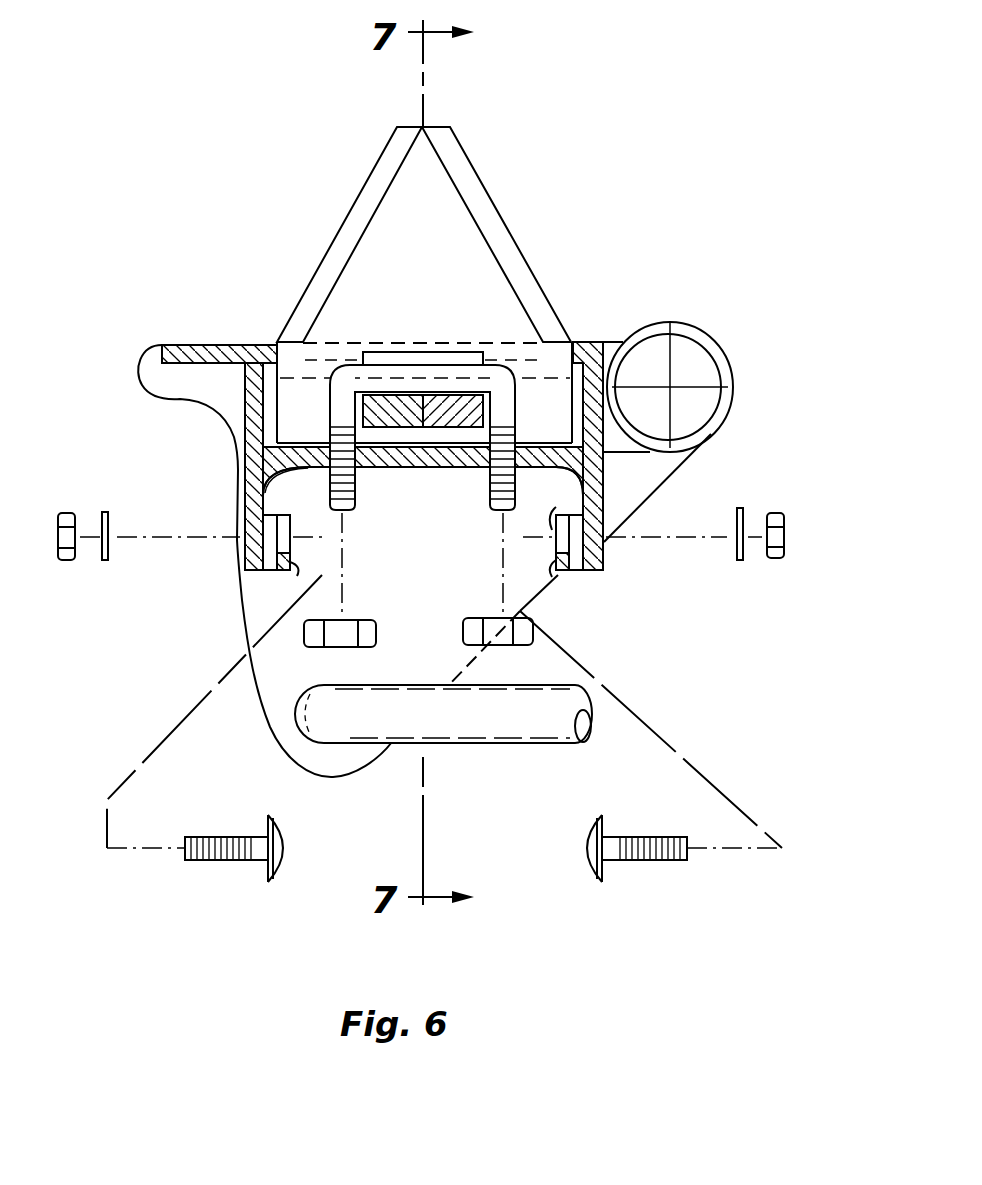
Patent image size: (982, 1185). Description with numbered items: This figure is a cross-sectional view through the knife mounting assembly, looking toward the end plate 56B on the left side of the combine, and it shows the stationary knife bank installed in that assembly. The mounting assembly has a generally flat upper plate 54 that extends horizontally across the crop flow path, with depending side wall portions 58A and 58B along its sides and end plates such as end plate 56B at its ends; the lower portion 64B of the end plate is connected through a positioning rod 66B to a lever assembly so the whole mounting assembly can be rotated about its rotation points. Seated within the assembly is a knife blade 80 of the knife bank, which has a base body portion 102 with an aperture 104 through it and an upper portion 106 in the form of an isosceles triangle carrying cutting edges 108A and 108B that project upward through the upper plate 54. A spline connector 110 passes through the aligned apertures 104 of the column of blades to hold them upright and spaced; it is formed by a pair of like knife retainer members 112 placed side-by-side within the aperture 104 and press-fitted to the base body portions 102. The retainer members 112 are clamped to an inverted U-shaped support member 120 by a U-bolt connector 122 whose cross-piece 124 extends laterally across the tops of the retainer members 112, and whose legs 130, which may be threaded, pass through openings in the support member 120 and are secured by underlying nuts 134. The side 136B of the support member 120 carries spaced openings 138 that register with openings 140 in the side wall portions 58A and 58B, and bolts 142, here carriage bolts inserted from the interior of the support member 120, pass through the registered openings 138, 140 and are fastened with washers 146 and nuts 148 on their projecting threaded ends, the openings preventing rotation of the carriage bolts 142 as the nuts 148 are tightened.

The upper plate 54 is at (193, 343).
The end plate 56B is at (263, 608).
The side wall portion 58A is at (700, 447).
The side wall portion 58B is at (244, 510).
The lower portion 64B is at (287, 667).
The positioning rod 66B is at (532, 745).
The knife blade 80 is at (426, 162).
The base body portion 102 is at (552, 388).
The aperture 104 is at (377, 347).
The upper portion 106 is at (431, 221).
The cutting edge 108A is at (381, 157).
The cutting edge 108B is at (492, 200).
The spline connector 110 is at (400, 470).
The knife retainer member 112 is at (377, 410).
The support member 120 is at (300, 475).
The U-bolt connector 122 is at (513, 373).
The cross-piece 124 is at (422, 358).
The leg 130 is at (357, 504).
The nut 134 is at (366, 649).
The side 136B is at (238, 588).
The opening 138 is at (312, 467).
The opening 140 is at (250, 540).
The bolt 142 is at (228, 862).
The washer 146 is at (108, 508).
The nut 148 is at (68, 565).